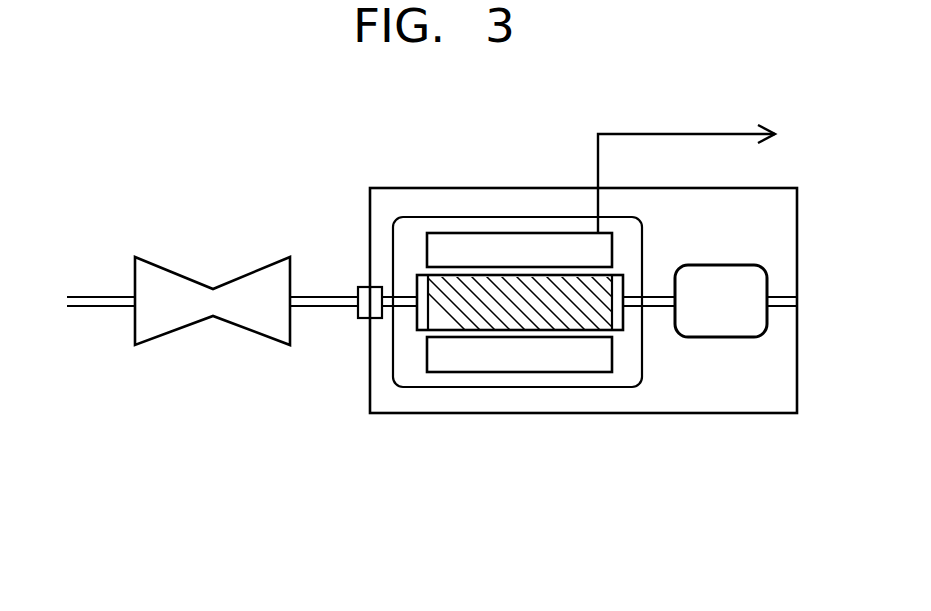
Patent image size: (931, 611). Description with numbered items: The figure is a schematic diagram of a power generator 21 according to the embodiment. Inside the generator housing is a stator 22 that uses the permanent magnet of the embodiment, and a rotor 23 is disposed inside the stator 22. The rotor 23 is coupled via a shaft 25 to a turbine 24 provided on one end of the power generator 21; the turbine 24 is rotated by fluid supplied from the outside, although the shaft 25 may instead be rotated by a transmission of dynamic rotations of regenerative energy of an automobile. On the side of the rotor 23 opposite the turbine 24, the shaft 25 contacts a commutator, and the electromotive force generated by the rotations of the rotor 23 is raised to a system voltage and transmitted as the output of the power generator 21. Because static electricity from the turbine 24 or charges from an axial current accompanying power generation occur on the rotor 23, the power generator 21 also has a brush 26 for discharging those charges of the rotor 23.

The power generator 21 is at (415, 188).
The stator 22 is at (486, 363).
The rotor 23 is at (533, 320).
The turbine 24 is at (257, 268).
The shaft 25 is at (328, 308).
The brush 26 is at (723, 337).